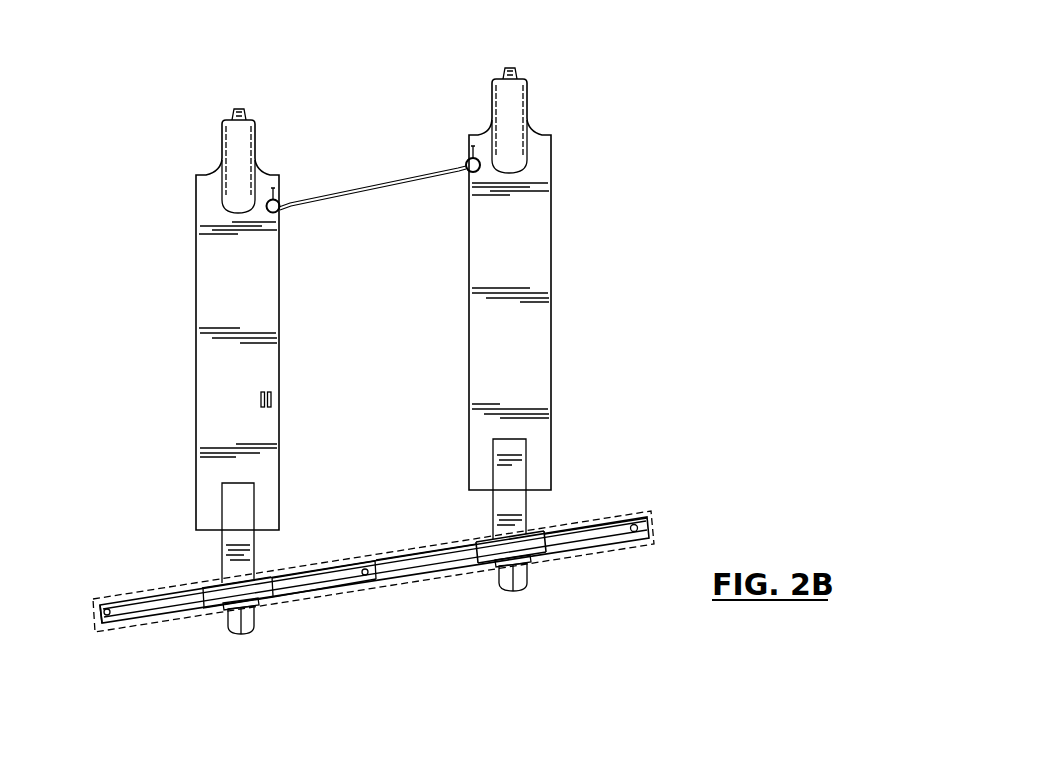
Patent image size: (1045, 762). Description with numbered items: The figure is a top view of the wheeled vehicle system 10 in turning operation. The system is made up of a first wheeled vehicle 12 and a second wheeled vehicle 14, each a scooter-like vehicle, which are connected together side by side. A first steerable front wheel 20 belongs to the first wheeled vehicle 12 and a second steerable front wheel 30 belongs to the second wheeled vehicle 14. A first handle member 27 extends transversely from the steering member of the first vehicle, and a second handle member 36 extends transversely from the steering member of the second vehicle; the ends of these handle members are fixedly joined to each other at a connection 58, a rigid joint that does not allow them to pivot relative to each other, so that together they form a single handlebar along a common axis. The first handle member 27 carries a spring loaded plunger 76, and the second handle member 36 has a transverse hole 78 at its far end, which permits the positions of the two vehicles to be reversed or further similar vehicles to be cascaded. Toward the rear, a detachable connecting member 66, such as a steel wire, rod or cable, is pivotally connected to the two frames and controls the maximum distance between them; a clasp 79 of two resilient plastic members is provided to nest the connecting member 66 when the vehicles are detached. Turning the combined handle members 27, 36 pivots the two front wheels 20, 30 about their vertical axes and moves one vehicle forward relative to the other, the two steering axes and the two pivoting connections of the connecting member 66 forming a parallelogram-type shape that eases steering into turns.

The wheeled vehicle system 10 is at (606, 109).
The first wheeled vehicle 12 is at (158, 373).
The second wheeled vehicle 14 is at (587, 338).
The first steerable front wheel 20 is at (258, 621).
The first handle member 27 is at (116, 600).
The second steerable front wheel 30 is at (532, 580).
The second handle member 36 is at (607, 517).
The connection 58 is at (365, 550).
The detachable rear connecting member 66 is at (362, 180).
The spring loaded plunger 76 is at (103, 603).
The transverse hole 78 is at (634, 523).
The clasp 79 is at (274, 397).